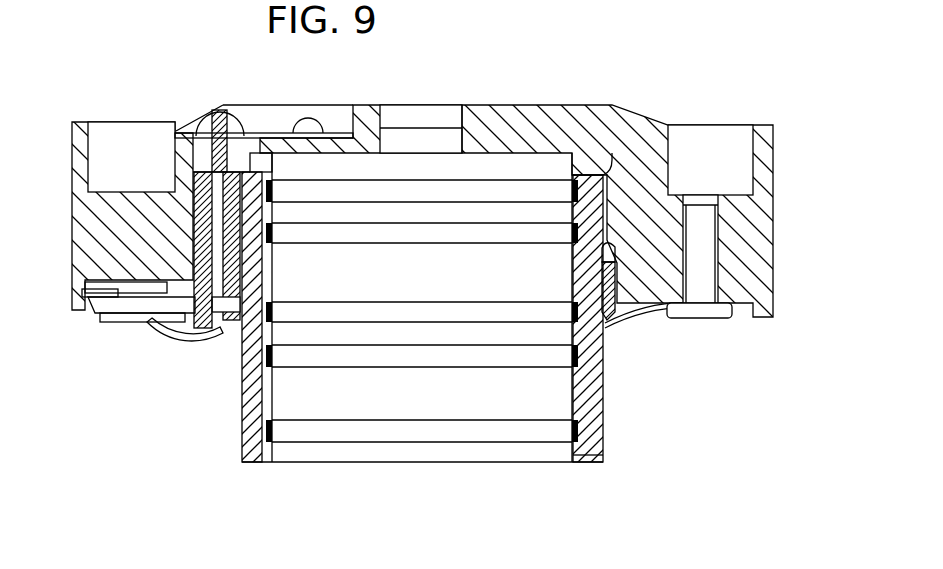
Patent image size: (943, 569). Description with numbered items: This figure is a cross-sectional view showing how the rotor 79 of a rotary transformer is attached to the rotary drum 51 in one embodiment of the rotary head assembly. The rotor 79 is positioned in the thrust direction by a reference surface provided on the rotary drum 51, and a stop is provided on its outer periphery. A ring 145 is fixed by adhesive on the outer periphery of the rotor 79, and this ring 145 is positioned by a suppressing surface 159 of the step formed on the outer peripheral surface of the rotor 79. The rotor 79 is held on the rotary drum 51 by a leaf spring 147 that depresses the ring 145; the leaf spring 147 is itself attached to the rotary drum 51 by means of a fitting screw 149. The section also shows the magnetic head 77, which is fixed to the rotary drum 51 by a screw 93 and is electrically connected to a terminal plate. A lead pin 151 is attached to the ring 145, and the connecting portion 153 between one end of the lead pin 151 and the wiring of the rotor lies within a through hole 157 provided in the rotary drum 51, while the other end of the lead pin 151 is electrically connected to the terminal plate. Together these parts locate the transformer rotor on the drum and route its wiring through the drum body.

The rotary drum 51 is at (495, 108).
The magnetic head 77 is at (85, 290).
The rotor of the rotary transformer 79 is at (585, 455).
The screw 93 is at (177, 342).
The ring 145 is at (153, 140).
The leaf spring 147 is at (640, 342).
The fitting screw 149 is at (718, 318).
The lead pin 151 is at (222, 330).
The connecting portion 153 is at (208, 113).
The through hole 157 is at (247, 147).
The suppressing surface 159 is at (632, 325).